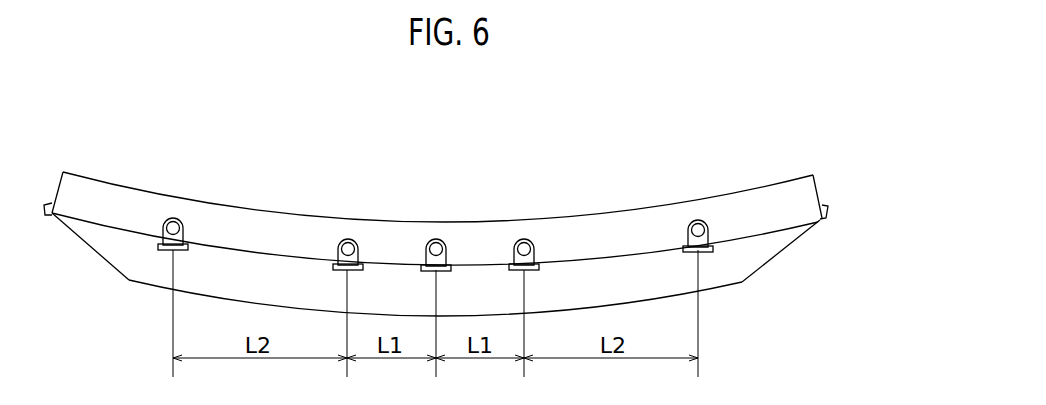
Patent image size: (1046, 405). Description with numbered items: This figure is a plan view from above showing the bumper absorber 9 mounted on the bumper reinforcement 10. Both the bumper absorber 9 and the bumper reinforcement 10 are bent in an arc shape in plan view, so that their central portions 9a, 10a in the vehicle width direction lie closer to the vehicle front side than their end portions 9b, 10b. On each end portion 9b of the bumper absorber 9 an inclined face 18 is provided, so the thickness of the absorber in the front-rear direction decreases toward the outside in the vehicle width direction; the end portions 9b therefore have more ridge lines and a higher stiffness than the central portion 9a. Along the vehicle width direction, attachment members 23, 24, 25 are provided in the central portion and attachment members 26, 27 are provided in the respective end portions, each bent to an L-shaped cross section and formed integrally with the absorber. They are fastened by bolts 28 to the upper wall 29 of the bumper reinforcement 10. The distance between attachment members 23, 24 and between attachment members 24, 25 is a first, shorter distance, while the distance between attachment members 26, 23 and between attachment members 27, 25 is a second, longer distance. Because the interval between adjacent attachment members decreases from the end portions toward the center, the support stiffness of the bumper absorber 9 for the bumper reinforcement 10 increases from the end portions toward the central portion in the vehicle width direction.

The bumper absorber 9 is at (436, 279).
The central portion 9a is at (415, 293).
The end portion 9b is at (436, 292).
The bumper reinforcement 10 is at (436, 182).
The central portion 10a is at (473, 245).
The end portion 10b is at (73, 197).
The inclined face 18 is at (781, 280).
The attachment member 23 is at (352, 257).
The attachment member 24 is at (445, 253).
The attachment member 25 is at (543, 250).
The attachment member 26 is at (164, 232).
The attachment member 27 is at (677, 199).
The bolt 28 is at (698, 221).
The upper wall 29 is at (242, 215).